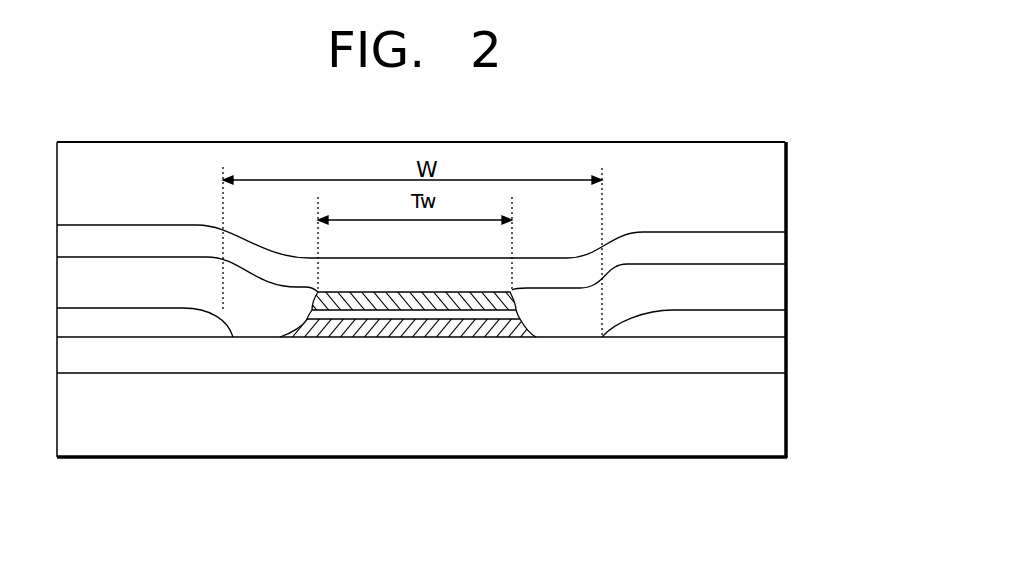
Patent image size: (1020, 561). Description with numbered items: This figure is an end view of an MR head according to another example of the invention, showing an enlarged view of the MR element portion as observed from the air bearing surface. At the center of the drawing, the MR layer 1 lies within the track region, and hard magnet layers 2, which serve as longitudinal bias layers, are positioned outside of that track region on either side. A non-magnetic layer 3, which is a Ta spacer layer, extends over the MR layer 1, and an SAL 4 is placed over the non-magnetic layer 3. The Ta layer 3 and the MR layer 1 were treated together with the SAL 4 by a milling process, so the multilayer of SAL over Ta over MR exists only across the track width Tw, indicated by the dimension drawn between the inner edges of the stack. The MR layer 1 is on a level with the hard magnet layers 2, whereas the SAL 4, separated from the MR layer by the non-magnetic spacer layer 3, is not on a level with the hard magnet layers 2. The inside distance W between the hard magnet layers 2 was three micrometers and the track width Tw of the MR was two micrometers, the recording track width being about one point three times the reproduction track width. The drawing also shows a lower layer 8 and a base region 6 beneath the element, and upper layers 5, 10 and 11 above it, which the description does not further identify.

The MR layer 1 is at (330, 327).
The hard magnet layers 2 is at (742, 320).
The non-magnetic layer 3 is at (402, 317).
The SAL 4 is at (463, 300).
The upper insulating gap layer 5 is at (728, 288).
The substrate 6 is at (768, 422).
The lower shield layer 8 is at (738, 353).
The upper shield layer 10 is at (728, 258).
The protective layer 11 is at (722, 208).